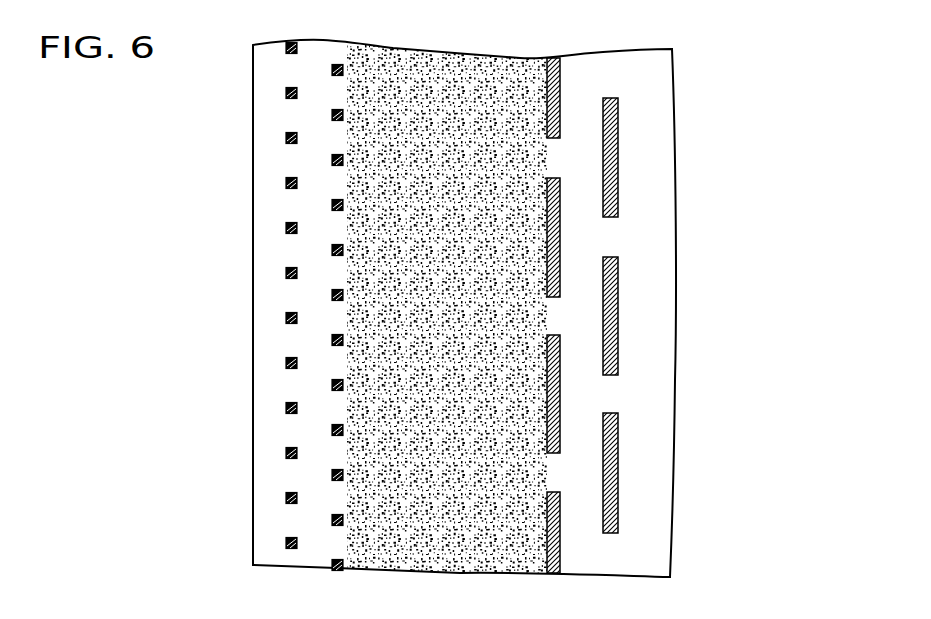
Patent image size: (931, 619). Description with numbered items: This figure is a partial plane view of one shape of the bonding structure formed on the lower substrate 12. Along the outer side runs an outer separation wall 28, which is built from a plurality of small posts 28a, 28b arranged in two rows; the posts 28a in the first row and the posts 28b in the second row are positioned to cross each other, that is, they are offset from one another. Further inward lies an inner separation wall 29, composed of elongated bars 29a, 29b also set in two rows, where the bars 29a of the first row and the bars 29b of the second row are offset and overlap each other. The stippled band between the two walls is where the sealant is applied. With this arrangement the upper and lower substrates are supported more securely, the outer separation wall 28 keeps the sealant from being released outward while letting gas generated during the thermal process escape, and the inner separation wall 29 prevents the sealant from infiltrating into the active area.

The lower substrate 12 is at (645, 50).
The outer separation wall 28 is at (233, 307).
The posts 28a is at (286, 497).
The posts 28b is at (332, 565).
The inner separation wall 29 is at (667, 315).
The bars 29a is at (560, 541).
The bars 29b is at (618, 496).